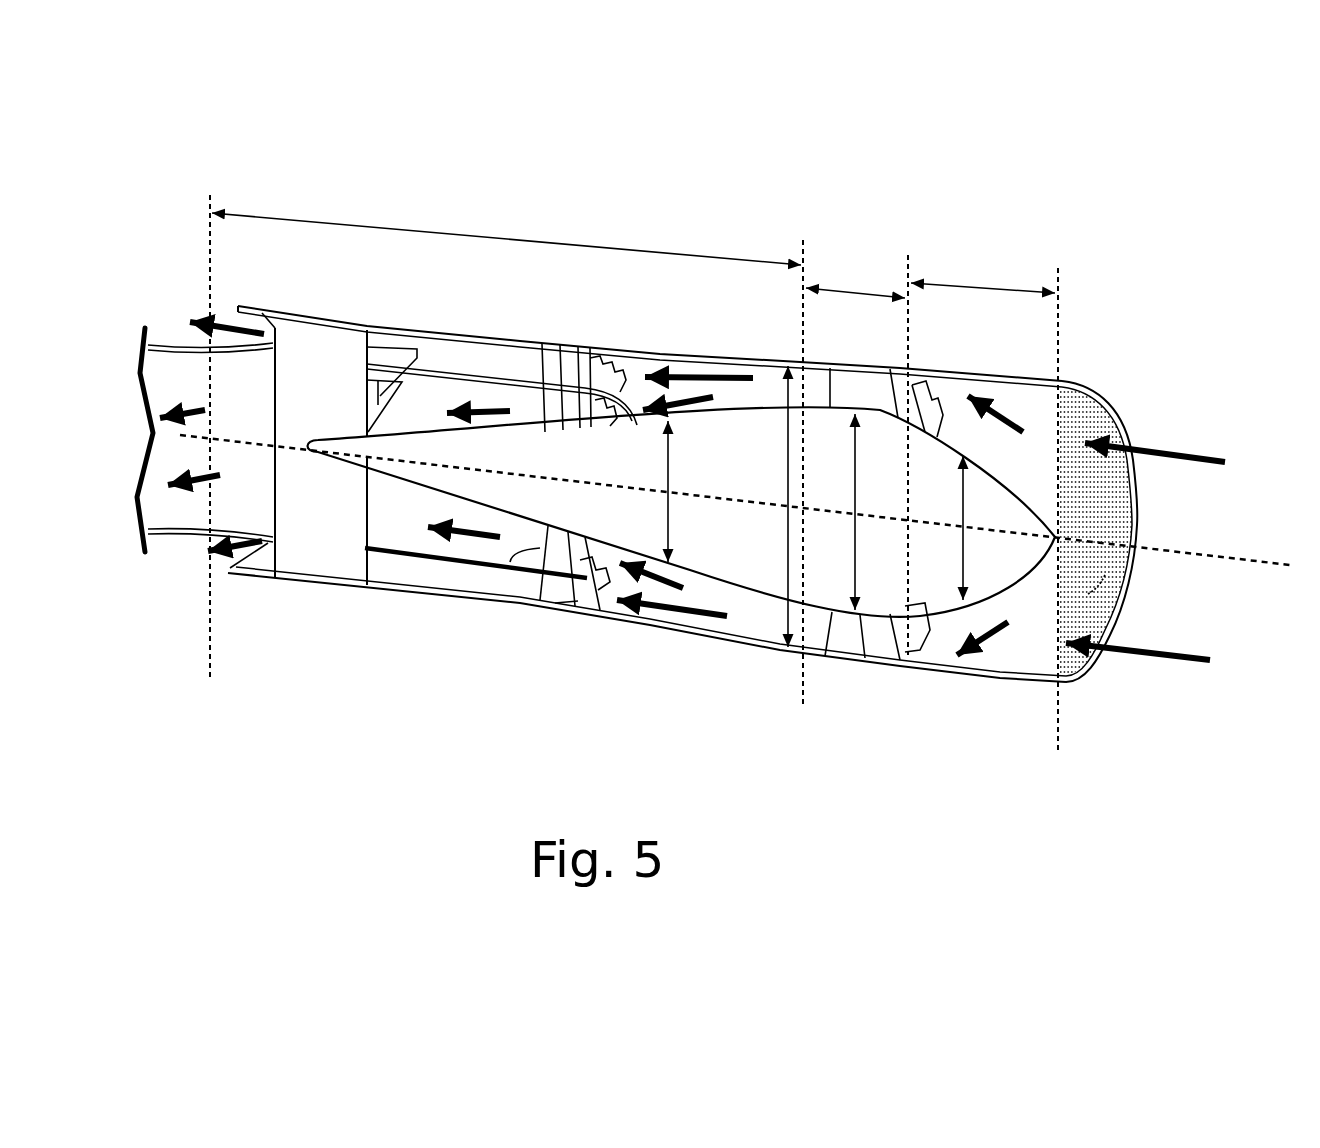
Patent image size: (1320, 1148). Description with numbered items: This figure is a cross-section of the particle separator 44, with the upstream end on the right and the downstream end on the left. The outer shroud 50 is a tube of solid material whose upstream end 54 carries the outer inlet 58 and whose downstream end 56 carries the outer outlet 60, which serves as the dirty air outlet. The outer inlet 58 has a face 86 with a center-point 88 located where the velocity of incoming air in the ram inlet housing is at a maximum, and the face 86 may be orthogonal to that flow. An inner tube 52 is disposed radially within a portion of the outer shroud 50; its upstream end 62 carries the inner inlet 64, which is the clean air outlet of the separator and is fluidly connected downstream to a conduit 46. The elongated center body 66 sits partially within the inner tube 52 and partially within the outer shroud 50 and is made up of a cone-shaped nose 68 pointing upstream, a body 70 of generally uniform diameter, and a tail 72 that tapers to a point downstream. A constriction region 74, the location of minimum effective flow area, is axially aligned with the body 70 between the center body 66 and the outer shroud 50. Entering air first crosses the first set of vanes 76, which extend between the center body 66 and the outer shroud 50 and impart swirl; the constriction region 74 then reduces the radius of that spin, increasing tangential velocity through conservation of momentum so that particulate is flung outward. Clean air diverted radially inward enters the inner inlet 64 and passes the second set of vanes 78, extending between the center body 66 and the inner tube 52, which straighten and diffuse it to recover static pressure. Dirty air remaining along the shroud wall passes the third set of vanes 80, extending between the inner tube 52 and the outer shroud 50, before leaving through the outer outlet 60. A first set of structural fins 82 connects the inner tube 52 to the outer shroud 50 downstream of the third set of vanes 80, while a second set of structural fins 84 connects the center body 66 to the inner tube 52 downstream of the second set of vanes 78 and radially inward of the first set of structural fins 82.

The particle separator 44 is at (977, 197).
The conduit 46 is at (152, 563).
The outer shroud 50 is at (730, 650).
The inner tube 52 is at (420, 566).
The upstream end of outer shroud 54 is at (1027, 688).
The downstream end of outer shroud 56 is at (253, 580).
The outer inlet 58 is at (1082, 386).
The outer outlet 60 is at (248, 306).
The upstream end of inner tube 62 is at (585, 603).
The inner inlet 64 is at (627, 563).
The center body 66 is at (767, 393).
The nose 68 is at (1025, 488).
The body 70 is at (872, 413).
The tail 72 is at (417, 435).
The constriction region 74 is at (850, 288).
The first set of vanes 76 is at (915, 388).
The second set of vanes 78 is at (515, 550).
The third set of vanes 80 is at (585, 367).
The first set of structural fins 82 is at (320, 557).
The second set of structural fins 84 is at (377, 397).
The face 86 is at (1093, 588).
The center-point 88 is at (1060, 541).